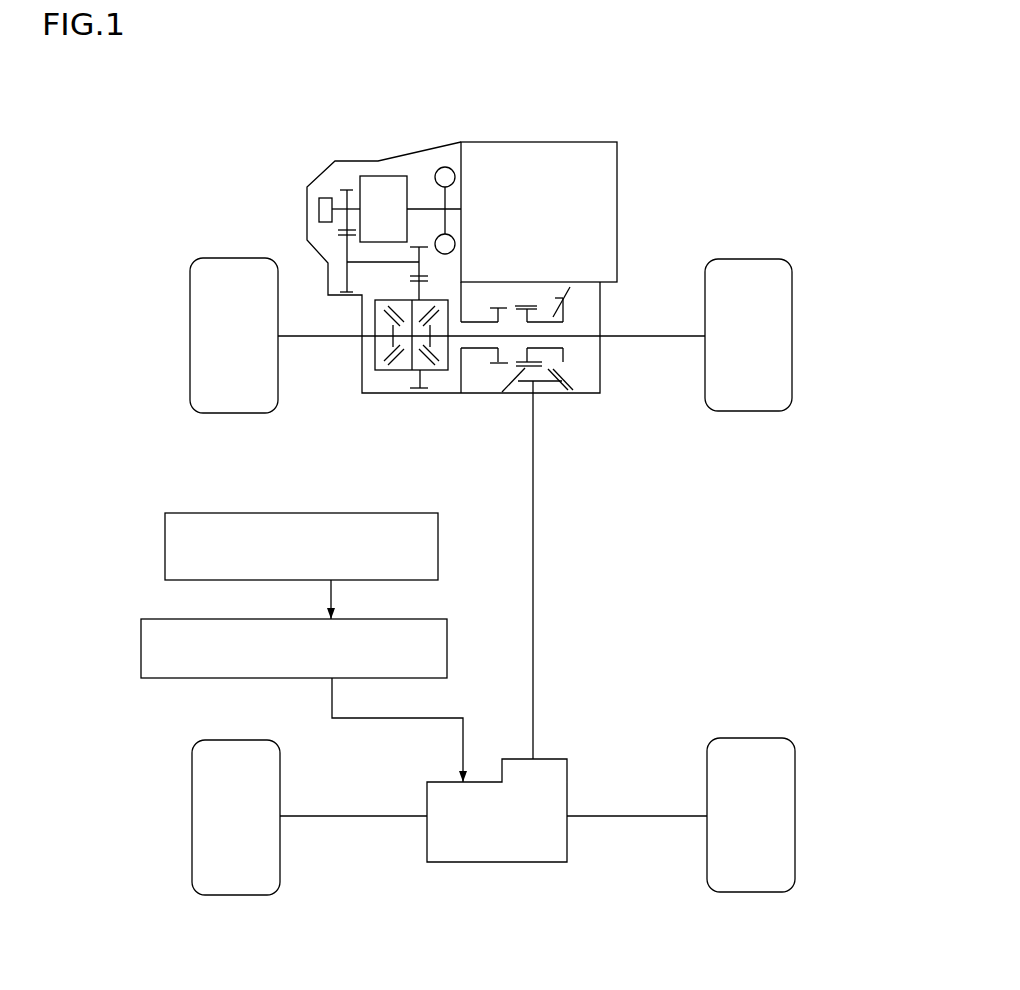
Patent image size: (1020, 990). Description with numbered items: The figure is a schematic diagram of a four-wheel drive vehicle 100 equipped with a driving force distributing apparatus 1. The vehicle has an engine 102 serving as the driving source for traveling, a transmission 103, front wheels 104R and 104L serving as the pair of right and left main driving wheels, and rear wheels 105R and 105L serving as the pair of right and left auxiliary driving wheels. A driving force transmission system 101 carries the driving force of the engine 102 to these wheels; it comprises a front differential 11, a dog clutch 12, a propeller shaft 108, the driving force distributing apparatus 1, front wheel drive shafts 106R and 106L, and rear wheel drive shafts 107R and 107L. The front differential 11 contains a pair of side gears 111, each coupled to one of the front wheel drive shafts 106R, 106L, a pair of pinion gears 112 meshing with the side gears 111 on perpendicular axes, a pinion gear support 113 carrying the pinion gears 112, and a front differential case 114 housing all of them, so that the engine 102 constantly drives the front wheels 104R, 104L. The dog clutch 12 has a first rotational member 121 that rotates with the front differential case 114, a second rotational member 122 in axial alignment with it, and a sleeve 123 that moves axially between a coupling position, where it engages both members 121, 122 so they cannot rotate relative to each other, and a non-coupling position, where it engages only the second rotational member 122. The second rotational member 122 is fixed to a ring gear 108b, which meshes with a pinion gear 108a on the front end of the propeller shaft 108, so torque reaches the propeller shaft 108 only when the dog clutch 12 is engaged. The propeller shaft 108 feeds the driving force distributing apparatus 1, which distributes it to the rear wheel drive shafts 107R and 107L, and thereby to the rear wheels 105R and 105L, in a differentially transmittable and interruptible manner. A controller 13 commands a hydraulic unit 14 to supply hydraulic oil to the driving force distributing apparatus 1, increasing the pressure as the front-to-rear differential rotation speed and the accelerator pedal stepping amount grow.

The four-wheel drive vehicle 100 is at (688, 120).
The driving force transmission system 101 is at (653, 245).
The engine 102 is at (517, 142).
The transmission 103 is at (368, 170).
The left front wheel 104L is at (190, 335).
The right front wheel 104R is at (793, 328).
The left rear wheel 105L is at (192, 817).
The right rear wheel 105R is at (795, 817).
The left front wheel drive shaft 106L is at (337, 335).
The right front wheel drive shaft 106R is at (660, 333).
The left rear wheel drive shaft 107L is at (375, 822).
The right rear wheel drive shaft 107R is at (615, 817).
The propeller shaft 108 is at (538, 547).
The pinion gear 108a is at (566, 391).
The ring gear 108b is at (563, 363).
The front differential 11 is at (370, 367).
The side gears 111 is at (410, 338).
The pinion gears 112 is at (424, 311).
The pinion gear support 113 is at (405, 335).
The front differential case 114 is at (387, 370).
The dog clutch 12 is at (557, 341).
The first rotational member 121 is at (500, 309).
The second rotational member 122 is at (553, 317).
The sleeve 123 is at (537, 307).
The controller 13 is at (203, 513).
The hydraulic unit 14 is at (267, 618).
The driving force distributing apparatus 1 is at (552, 758).